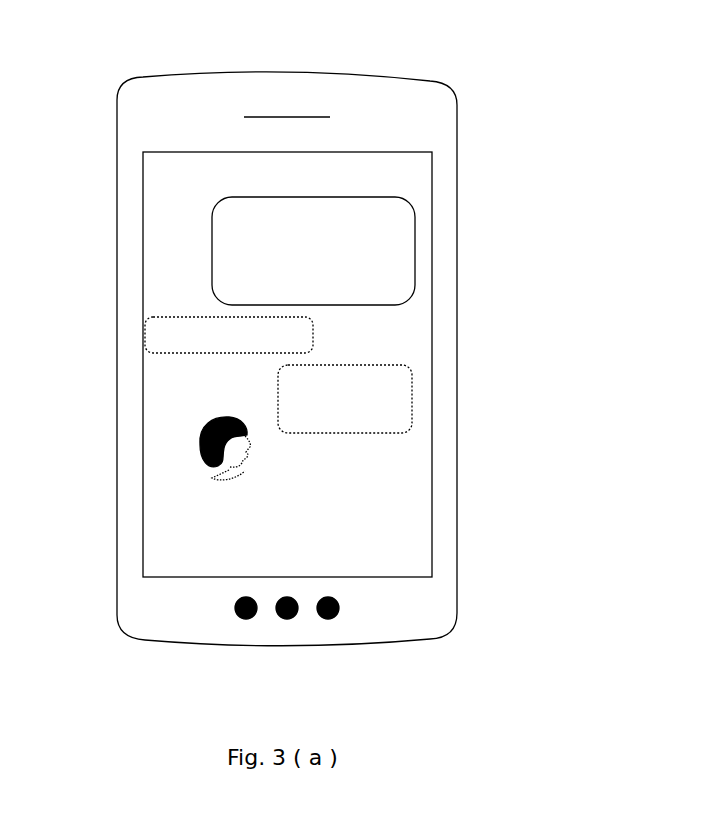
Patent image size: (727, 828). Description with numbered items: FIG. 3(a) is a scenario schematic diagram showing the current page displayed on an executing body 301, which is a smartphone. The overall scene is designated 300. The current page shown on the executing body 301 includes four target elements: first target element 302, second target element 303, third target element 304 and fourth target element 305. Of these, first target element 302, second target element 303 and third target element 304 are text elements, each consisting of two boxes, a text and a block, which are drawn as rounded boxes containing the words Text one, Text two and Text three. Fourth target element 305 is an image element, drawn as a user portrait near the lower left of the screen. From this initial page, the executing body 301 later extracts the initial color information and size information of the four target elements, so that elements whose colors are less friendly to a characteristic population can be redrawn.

The display interface 300 is at (432, 33).
The executing body 301 is at (287, 390).
The target element 1 302 is at (414, 245).
The target element 2 303 is at (143, 330).
The target element 3 304 is at (411, 398).
The target element 4 305 is at (196, 440).